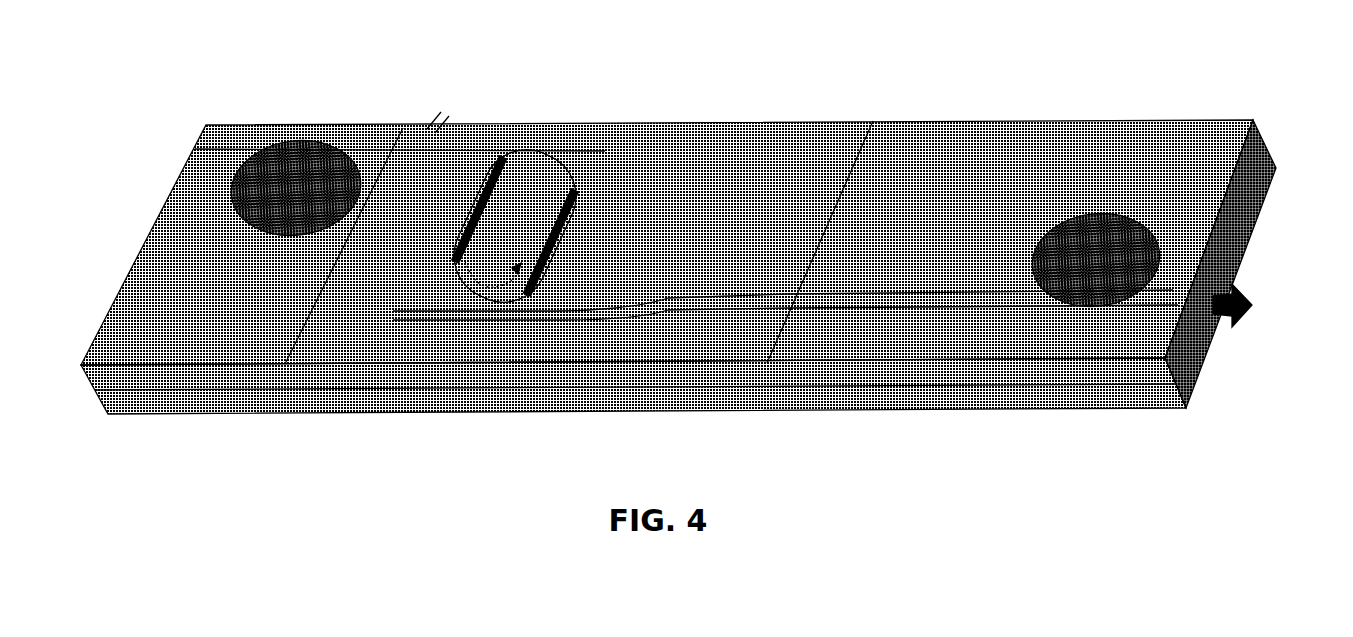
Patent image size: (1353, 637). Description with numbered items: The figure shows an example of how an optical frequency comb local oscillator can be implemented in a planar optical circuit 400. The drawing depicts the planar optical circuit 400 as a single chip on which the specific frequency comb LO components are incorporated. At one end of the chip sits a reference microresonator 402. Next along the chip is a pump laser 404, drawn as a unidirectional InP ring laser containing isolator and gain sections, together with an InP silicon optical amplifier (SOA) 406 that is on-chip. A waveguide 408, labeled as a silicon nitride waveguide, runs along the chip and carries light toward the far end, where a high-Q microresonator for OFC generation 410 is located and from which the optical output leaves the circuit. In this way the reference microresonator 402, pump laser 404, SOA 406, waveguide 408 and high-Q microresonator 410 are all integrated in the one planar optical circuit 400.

The planar optical circuit 400 is at (709, 254).
The reference microresonator 402 is at (287, 132).
The pump laser 404 is at (523, 148).
The InP silicon optical amplifier (SOA) 406 is at (653, 303).
The waveguide 408 is at (888, 300).
The high-Q microresonator for OFC generation 410 is at (1071, 300).